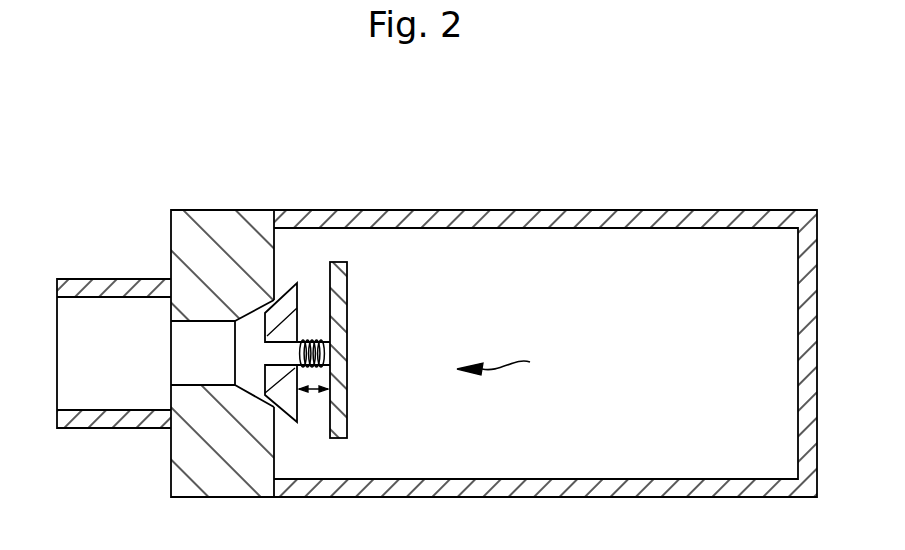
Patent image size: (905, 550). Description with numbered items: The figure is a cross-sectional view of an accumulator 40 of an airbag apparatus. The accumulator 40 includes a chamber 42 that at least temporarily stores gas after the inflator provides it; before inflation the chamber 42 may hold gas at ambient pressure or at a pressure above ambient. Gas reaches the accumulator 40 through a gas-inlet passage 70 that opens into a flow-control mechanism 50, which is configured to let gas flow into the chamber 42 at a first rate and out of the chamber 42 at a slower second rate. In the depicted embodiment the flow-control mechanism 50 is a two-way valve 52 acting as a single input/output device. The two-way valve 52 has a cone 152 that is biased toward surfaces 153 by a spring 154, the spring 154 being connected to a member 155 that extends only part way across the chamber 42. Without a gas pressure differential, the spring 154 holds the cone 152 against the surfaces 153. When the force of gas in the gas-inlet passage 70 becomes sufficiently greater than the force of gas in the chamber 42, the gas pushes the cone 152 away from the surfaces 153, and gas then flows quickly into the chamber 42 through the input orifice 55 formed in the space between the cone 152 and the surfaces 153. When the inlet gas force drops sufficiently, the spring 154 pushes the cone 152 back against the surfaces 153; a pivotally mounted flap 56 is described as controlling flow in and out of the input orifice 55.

The accumulator 40 is at (382, 183).
The chamber 42 is at (500, 241).
The flow-control mechanism 50 is at (213, 210).
The two-way valve 52 is at (457, 369).
The input orifice 55 is at (275, 407).
The pivotally mounted flap 56 is at (266, 350).
The gas-inlet passage 70 is at (104, 279).
The cone 152 is at (293, 328).
The surfaces 153 is at (296, 310).
The spring 154 is at (324, 355).
The member 155 is at (348, 297).